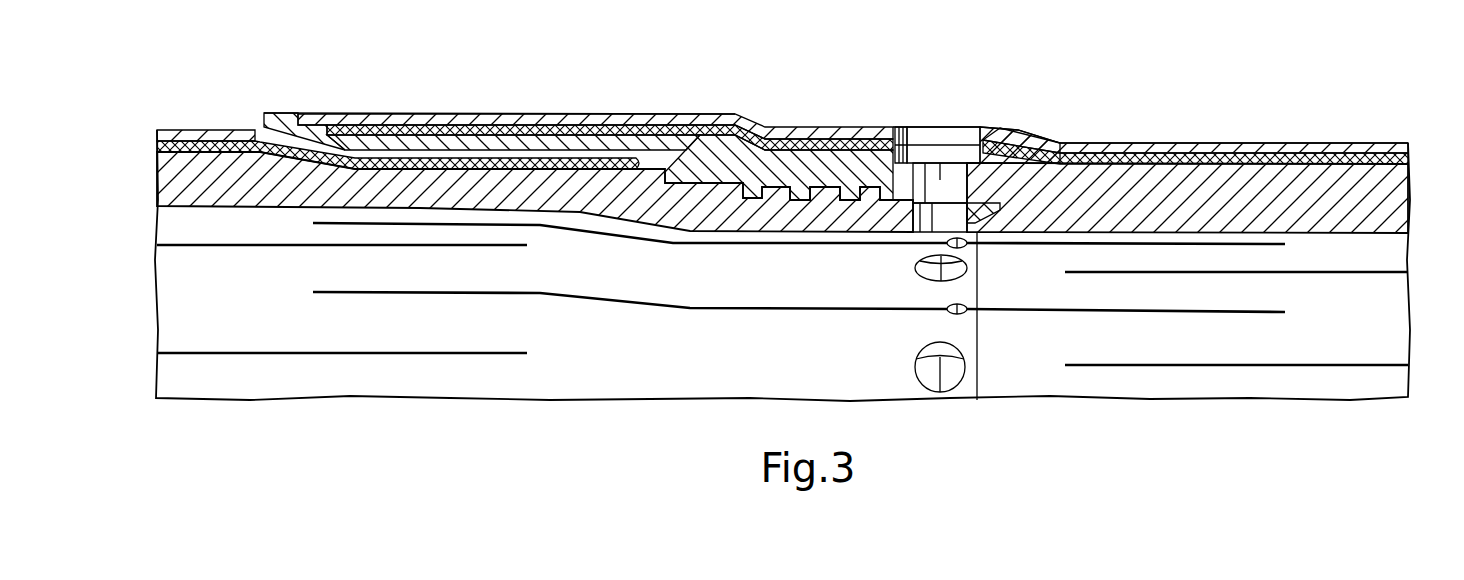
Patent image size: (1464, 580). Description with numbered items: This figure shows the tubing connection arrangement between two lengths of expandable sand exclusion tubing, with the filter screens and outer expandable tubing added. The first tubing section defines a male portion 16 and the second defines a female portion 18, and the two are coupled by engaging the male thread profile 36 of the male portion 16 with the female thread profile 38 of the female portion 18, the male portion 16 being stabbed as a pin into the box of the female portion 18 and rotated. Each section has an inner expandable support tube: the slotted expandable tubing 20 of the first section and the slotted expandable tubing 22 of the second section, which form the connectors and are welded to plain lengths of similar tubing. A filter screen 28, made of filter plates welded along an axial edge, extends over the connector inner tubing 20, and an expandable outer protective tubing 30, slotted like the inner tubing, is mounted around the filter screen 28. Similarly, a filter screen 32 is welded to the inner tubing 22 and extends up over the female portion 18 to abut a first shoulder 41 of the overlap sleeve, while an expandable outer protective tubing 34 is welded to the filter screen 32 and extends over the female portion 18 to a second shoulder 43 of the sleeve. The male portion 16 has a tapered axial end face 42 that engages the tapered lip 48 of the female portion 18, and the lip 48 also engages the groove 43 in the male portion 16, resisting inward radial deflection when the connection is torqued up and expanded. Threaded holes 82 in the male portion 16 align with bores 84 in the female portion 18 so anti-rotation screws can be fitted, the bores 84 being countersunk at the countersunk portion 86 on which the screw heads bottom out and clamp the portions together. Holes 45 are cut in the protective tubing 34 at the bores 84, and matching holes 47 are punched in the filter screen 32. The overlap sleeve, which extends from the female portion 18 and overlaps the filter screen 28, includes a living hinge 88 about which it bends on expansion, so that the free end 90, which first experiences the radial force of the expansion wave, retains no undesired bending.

The male portion 16 is at (714, 162).
The female portion 18 is at (700, 90).
The expandable tubing 20 is at (172, 172).
The expandable tubing 22 is at (1388, 188).
The filter screen 28 is at (182, 142).
The expandable outer protective tubing 30 is at (222, 131).
The filter screen 32 is at (1325, 150).
The expandable outer protective tubing 34 is at (1265, 148).
The male thread profile 36 is at (822, 183).
The female thread profile 38 is at (872, 185).
The first shoulder 41 is at (352, 132).
The tapered axial end face 42 is at (1020, 160).
The groove 43 is at (312, 116).
The holes 45 is at (946, 145).
The matching holes 47 is at (960, 172).
The tapered lip 48 is at (988, 228).
The threaded holes 82 is at (930, 225).
The bores 84 is at (957, 170).
The countersunk portion 86 is at (903, 127).
The hinge 88 is at (612, 128).
The free end 90 is at (268, 126).